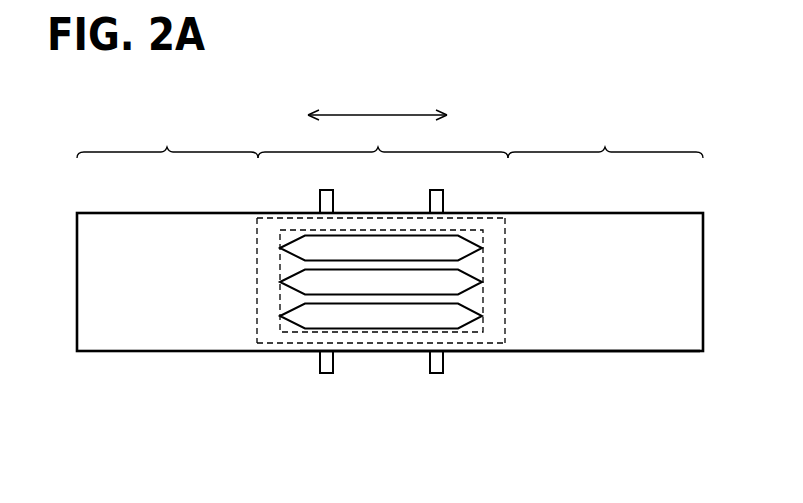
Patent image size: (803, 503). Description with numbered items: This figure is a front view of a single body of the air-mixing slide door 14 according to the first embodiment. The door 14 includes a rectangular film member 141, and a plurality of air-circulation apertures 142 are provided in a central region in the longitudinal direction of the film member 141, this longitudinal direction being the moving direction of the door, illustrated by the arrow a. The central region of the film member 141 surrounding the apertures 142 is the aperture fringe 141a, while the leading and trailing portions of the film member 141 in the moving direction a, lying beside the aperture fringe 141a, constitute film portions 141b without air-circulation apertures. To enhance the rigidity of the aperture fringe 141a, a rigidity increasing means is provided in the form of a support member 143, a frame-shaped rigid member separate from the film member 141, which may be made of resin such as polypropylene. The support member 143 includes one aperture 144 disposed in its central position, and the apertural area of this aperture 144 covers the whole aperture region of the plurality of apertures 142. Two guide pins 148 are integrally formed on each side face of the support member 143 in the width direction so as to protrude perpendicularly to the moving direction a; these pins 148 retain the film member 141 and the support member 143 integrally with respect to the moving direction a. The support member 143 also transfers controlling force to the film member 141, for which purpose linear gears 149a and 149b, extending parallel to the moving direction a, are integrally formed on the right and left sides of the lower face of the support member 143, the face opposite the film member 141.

The air-mixing slide door 14 is at (605, 357).
The film member 141 is at (653, 354).
The aperture fringe 141a is at (383, 139).
The film portions 141b is at (390, 138).
The air-circulation apertures 142 is at (457, 319).
The support member 143 is at (257, 285).
The aperture 144 is at (280, 302).
The guide pins 148 is at (318, 196).
The linear gear 149a is at (503, 334).
The linear gear 149b is at (510, 227).
The door moving direction a is at (378, 114).